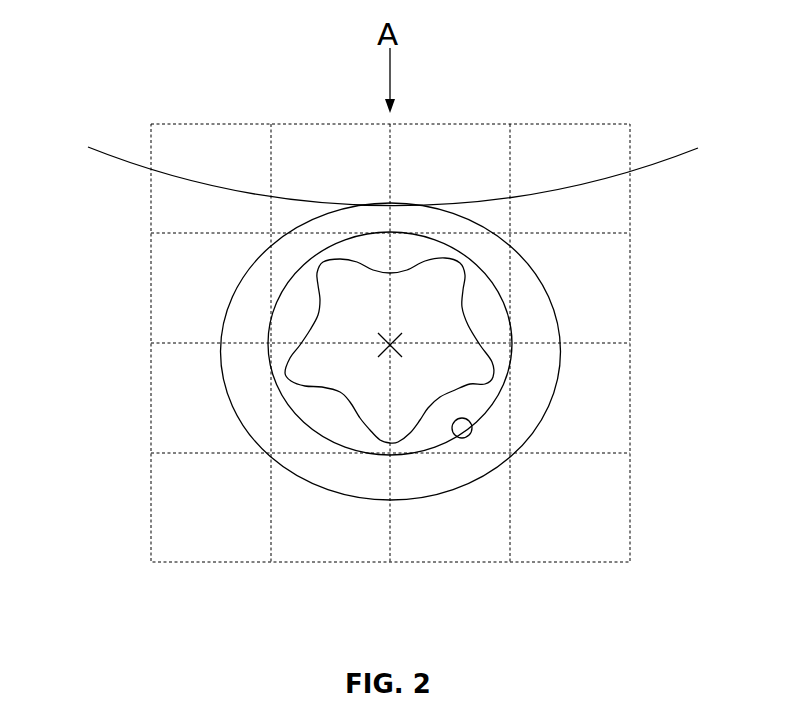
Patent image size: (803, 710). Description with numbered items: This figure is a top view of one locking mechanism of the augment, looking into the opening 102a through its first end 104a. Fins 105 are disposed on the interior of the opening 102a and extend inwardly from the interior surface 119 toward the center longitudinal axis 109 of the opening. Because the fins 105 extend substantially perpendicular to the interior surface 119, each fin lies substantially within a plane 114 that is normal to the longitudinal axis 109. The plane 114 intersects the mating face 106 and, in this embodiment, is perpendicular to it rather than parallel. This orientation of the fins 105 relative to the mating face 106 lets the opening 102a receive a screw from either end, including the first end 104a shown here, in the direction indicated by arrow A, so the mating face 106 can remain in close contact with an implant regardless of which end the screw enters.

The mating face 106 is at (687, 148).
The first end of the opening 104a is at (240, 385).
The opening 102a is at (350, 380).
The fins 105 is at (468, 310).
The center longitudinal axis 109 is at (390, 343).
The interior surface 119 is at (471, 437).
The plane 114 is at (425, 114).